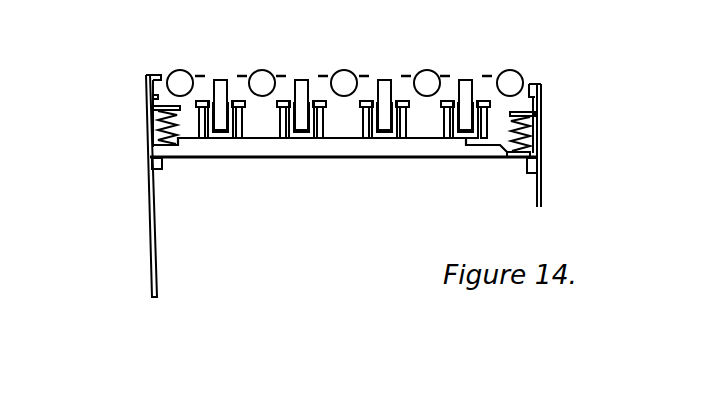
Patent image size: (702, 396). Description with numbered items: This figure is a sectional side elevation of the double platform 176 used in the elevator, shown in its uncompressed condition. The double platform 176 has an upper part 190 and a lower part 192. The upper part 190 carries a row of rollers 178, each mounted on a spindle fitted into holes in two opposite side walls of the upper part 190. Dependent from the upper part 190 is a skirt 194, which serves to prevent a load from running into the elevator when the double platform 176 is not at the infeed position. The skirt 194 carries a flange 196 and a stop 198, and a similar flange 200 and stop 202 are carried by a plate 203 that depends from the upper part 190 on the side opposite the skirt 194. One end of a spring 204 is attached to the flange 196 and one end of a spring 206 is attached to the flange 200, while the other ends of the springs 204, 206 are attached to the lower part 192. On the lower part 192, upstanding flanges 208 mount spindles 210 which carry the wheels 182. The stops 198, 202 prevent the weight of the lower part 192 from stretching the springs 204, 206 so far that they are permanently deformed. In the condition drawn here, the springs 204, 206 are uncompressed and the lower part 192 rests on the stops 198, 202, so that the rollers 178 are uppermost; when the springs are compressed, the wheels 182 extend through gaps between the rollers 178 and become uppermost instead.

The double platform 176 is at (146, 89).
The rollers 178 is at (510, 83).
The wheels 182 is at (467, 80).
The upper part 190 is at (157, 73).
The lower part 192 is at (240, 146).
The skirt 194 is at (150, 195).
The flange 196 is at (151, 96).
The stop 198 is at (152, 162).
The flange 200 is at (541, 100).
The stop 202 is at (534, 167).
The plate 203 is at (542, 150).
The spring 204 is at (152, 127).
The spring 206 is at (528, 127).
The upstanding flanges 208 is at (493, 184).
The spindles 210 is at (433, 184).